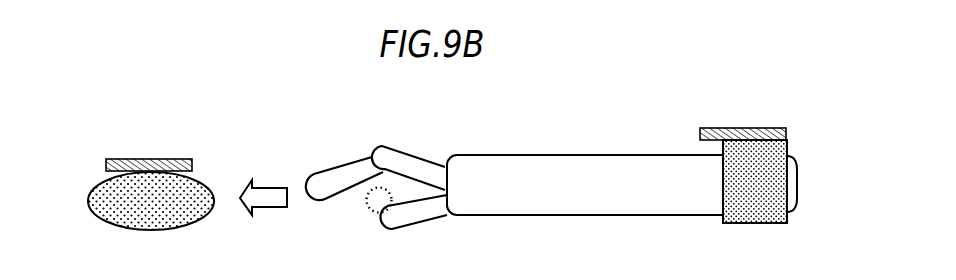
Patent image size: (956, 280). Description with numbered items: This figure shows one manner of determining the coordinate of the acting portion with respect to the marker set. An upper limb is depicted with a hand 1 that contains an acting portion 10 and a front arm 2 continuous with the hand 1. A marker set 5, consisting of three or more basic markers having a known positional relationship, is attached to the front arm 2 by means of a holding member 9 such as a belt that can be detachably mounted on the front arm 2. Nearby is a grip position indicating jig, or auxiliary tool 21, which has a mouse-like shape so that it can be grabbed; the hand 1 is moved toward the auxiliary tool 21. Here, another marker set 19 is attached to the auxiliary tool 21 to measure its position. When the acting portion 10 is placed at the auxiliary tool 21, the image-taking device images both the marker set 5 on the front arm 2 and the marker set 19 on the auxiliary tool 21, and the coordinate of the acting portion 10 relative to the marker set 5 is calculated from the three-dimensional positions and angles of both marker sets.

The hand 1 is at (407, 152).
The front arm 2 is at (492, 155).
The marker set 5 is at (730, 128).
The holding member 9 is at (788, 141).
The acting portion 10 is at (390, 207).
The marker set 19 is at (148, 159).
The auxiliary tool 21 is at (113, 226).